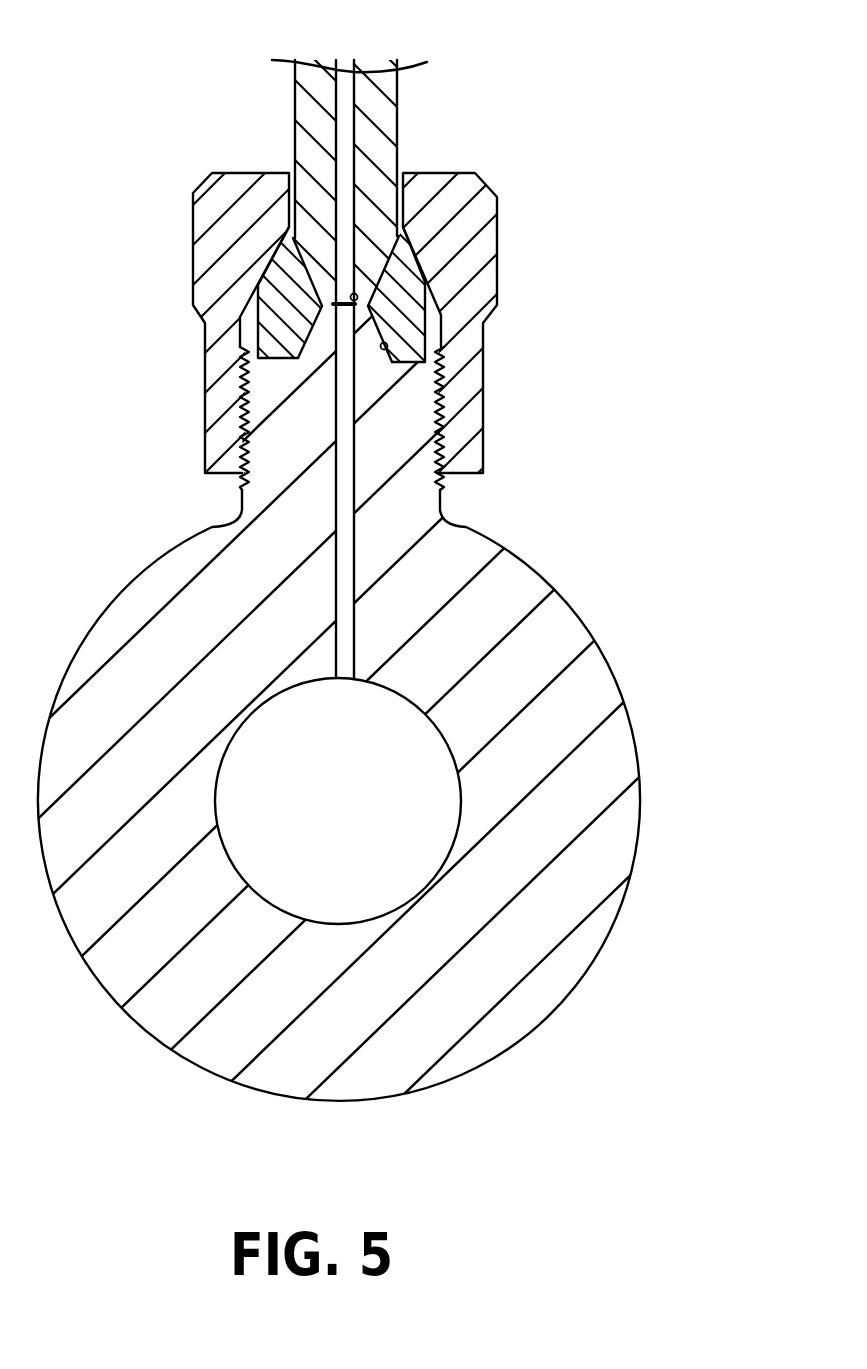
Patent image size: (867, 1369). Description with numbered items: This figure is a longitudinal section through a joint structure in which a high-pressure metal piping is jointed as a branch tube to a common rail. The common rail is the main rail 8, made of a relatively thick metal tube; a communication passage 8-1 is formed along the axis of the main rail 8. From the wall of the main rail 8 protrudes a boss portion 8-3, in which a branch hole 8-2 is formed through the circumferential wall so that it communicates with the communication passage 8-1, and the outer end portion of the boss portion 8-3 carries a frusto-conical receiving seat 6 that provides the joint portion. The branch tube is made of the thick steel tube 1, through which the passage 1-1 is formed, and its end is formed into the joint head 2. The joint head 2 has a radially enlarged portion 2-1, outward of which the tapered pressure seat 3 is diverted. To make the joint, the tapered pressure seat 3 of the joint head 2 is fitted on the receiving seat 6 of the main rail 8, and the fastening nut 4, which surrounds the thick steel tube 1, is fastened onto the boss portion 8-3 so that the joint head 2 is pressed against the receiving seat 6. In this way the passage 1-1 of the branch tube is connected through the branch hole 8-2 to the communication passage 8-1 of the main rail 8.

The thick steel tube 1 is at (385, 108).
The passage 1-1 is at (345, 72).
The joint head 2 is at (230, 320).
The radially enlarged portion 2-1 is at (410, 335).
The pressure seat 3 is at (358, 299).
The fastening nut 4 is at (473, 227).
The receiving seat 6 is at (384, 349).
The main rail 8 is at (572, 637).
The communication passage 8-1 is at (447, 778).
The branch hole 8-2 is at (335, 678).
The boss portion 8-3 is at (227, 395).